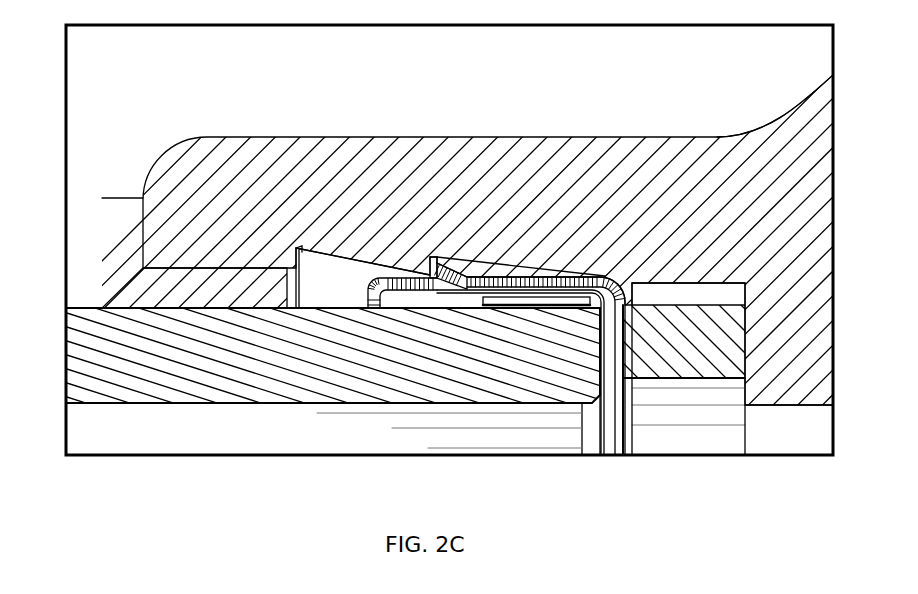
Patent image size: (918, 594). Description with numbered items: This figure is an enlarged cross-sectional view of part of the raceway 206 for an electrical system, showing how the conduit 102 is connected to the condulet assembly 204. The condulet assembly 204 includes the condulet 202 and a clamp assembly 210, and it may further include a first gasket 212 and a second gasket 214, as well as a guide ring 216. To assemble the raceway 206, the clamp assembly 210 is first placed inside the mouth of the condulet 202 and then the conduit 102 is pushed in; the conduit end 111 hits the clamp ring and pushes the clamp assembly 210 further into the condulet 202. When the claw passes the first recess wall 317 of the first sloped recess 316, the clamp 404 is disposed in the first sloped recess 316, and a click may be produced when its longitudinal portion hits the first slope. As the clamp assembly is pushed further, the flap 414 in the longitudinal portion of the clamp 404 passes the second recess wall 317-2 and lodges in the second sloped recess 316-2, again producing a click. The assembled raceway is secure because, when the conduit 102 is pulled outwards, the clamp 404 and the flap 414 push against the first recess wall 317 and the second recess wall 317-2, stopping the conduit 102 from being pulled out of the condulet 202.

The conduit 102 is at (317, 383).
The conduit end 111 is at (180, 333).
The condulet 202 is at (412, 137).
The condulet assembly 204 is at (638, 110).
The raceway 206 is at (174, 114).
The clamp assembly 210 is at (630, 283).
The first gasket 212 is at (588, 276).
The second gasket 214 is at (722, 340).
The guide ring 216 is at (127, 231).
The first sloped recess 316 is at (325, 268).
The second sloped recess 316-2 is at (527, 268).
The first recess wall 317 is at (318, 245).
The second recess wall 317-2 is at (434, 258).
The clamp 404 is at (412, 290).
The flap 414 is at (455, 292).